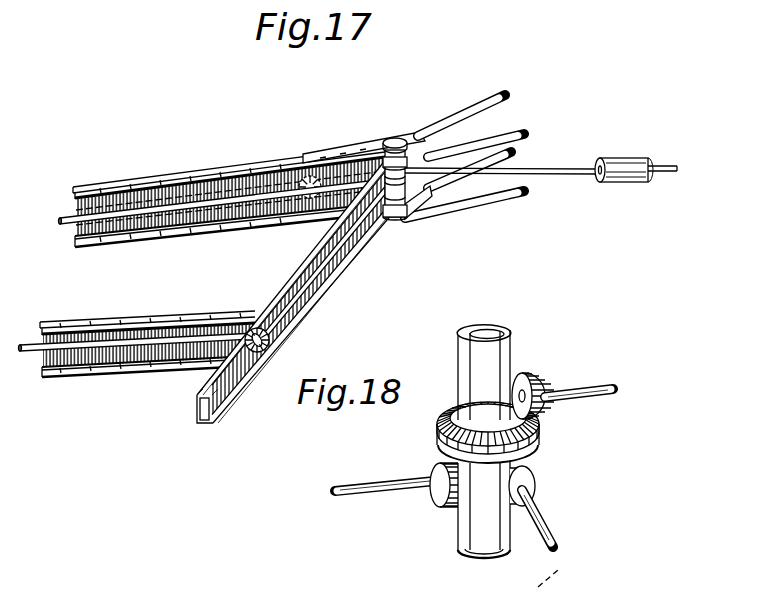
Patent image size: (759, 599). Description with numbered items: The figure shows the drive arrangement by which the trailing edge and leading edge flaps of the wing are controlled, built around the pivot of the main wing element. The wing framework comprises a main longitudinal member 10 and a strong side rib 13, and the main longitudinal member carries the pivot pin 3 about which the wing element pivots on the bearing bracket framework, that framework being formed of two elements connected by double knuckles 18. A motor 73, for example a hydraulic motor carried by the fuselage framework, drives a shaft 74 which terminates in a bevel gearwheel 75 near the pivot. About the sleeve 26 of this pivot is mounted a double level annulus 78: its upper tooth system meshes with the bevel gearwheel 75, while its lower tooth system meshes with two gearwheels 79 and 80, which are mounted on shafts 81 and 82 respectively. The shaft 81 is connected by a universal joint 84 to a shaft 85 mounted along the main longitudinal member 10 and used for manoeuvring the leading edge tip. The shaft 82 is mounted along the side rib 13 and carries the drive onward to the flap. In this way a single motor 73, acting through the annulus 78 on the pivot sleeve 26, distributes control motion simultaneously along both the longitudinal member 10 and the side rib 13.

In FIG. 17, the main longitudinal member 10 is at (170, 180).
In FIG. 17, the shaft 85 is at (63, 228).
In FIG. 17, the universal joint 84 is at (295, 152).
In FIG. 17, the pivot pin 3 is at (394, 140).
In FIG. 17, the double knuckles 18 is at (487, 102).
In FIG. 17, the shaft 74 is at (557, 167).
In FIG. 18, the shaft 74 is at (583, 387).
In FIG. 17, the motor 73 is at (622, 167).
In FIG. 17, the shaft 82 is at (297, 300).
In FIG. 18, the shaft 82 is at (540, 520).
In FIG. 17, the side rib 13 is at (269, 293).
In FIG. 18, the sleeve 26 is at (500, 353).
In FIG. 18, the bevel gearwheel 75 is at (533, 377).
In FIG. 18, the double level annulus 78 is at (453, 407).
In FIG. 18, the shaft 81 is at (377, 481).
In FIG. 18, the gearwheel 80 is at (524, 476).
In FIG. 18, the gearwheel 79 is at (438, 500).